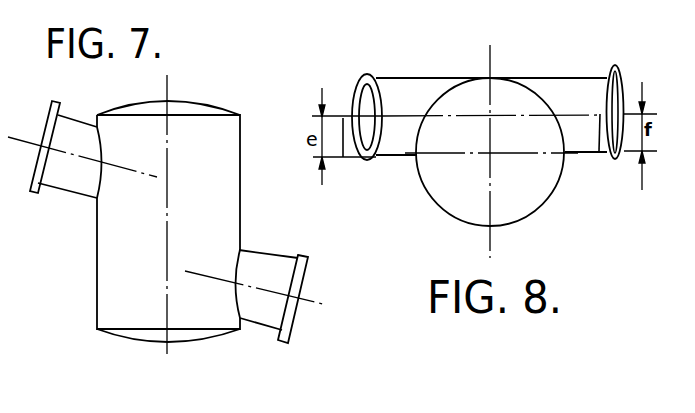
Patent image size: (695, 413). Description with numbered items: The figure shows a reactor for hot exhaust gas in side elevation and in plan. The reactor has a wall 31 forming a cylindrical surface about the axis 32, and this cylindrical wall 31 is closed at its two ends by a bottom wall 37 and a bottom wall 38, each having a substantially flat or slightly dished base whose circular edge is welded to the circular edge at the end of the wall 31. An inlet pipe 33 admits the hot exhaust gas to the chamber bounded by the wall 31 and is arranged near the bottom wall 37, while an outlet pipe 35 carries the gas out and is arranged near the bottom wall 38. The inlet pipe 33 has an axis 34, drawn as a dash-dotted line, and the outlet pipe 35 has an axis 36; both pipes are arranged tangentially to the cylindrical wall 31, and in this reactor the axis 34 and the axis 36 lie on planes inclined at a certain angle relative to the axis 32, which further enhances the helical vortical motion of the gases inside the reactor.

In FIG. 7, the wall 31 is at (97, 271).
In FIG. 8, the wall 31 is at (530, 213).
In FIG. 7, the axis 32 is at (168, 129).
In FIG. 8, the axis 32 is at (488, 157).
In FIG. 7, the inlet pipe 33 is at (60, 190).
In FIG. 8, the inlet pipe 33 is at (412, 157).
In FIG. 7, the axis of the inlet pipe 34 is at (60, 156).
In FIG. 8, the axis of the inlet pipe 34 is at (357, 132).
In FIG. 7, the outlet pipe 35 is at (264, 252).
In FIG. 8, the outlet pipe 35 is at (575, 152).
In FIG. 7, the axis of the outlet pipe 36 is at (308, 296).
In FIG. 8, the axis of the outlet pipe 36 is at (602, 152).
In FIG. 7, the bottom wall 37 is at (122, 115).
In FIG. 7, the bottom wall 38 is at (217, 336).